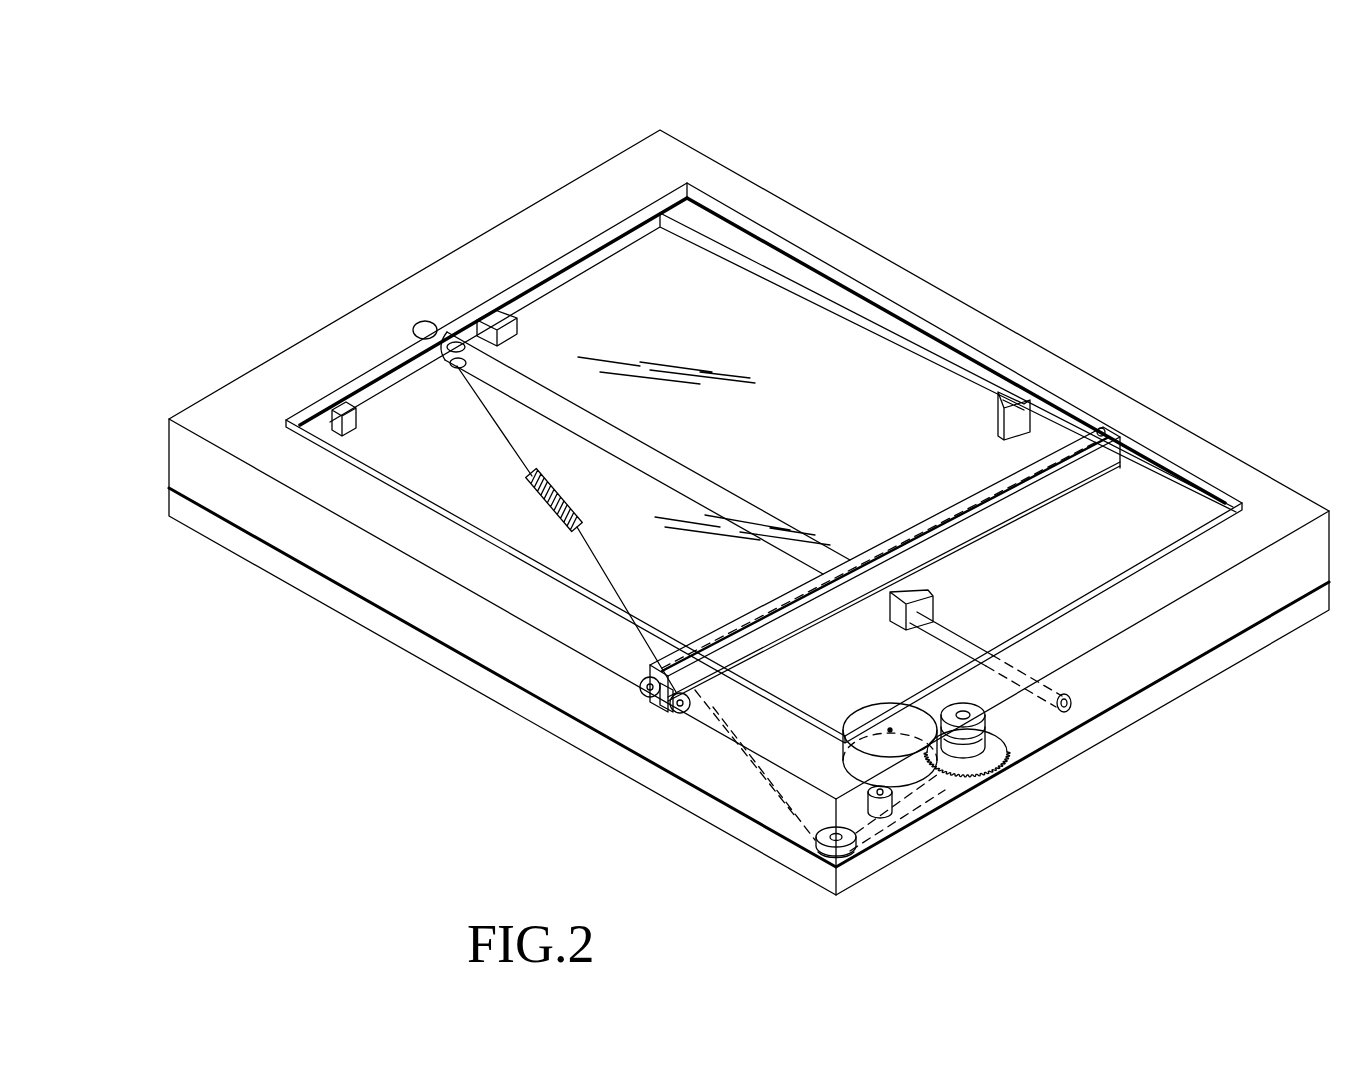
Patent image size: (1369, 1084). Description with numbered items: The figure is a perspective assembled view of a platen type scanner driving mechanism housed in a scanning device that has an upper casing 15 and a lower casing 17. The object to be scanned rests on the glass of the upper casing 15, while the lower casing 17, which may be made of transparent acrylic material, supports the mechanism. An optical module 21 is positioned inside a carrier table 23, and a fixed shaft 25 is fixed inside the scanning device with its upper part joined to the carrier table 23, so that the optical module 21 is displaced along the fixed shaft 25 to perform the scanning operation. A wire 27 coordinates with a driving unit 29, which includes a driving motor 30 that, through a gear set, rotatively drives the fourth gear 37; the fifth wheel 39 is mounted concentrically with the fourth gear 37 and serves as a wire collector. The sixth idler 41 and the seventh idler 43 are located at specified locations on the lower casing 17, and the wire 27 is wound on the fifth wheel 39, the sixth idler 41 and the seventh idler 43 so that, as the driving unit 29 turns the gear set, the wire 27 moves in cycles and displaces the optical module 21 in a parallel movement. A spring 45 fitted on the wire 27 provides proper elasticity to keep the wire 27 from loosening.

The upper casing 15 is at (925, 300).
The lower casing 17 is at (1172, 692).
The optical module 21 is at (1116, 448).
The carrier table 23 is at (1085, 487).
The fixed shaft 25 is at (706, 490).
The wire 27 is at (504, 438).
The driving unit 29 is at (858, 695).
The driving motor 30 is at (920, 797).
The fourth gear 37 is at (1068, 766).
The fifth wheel 39 is at (1005, 775).
The sixth idler 41 is at (863, 867).
The seventh idler 43 is at (457, 332).
The spring 45 is at (552, 512).